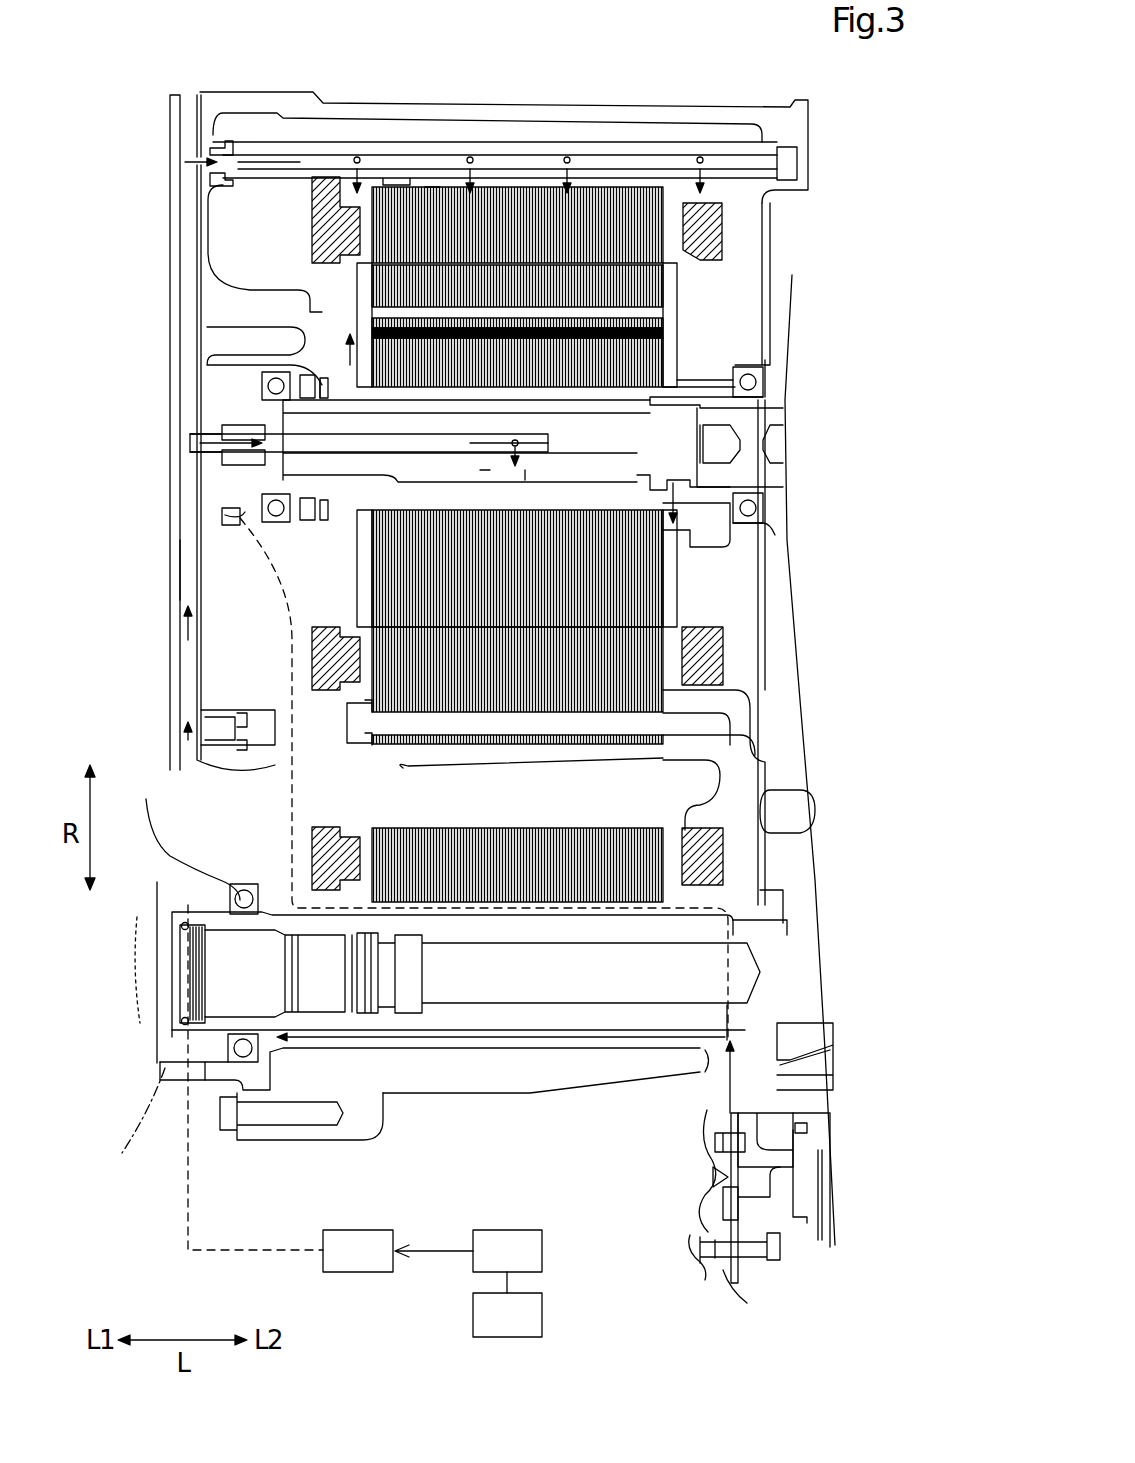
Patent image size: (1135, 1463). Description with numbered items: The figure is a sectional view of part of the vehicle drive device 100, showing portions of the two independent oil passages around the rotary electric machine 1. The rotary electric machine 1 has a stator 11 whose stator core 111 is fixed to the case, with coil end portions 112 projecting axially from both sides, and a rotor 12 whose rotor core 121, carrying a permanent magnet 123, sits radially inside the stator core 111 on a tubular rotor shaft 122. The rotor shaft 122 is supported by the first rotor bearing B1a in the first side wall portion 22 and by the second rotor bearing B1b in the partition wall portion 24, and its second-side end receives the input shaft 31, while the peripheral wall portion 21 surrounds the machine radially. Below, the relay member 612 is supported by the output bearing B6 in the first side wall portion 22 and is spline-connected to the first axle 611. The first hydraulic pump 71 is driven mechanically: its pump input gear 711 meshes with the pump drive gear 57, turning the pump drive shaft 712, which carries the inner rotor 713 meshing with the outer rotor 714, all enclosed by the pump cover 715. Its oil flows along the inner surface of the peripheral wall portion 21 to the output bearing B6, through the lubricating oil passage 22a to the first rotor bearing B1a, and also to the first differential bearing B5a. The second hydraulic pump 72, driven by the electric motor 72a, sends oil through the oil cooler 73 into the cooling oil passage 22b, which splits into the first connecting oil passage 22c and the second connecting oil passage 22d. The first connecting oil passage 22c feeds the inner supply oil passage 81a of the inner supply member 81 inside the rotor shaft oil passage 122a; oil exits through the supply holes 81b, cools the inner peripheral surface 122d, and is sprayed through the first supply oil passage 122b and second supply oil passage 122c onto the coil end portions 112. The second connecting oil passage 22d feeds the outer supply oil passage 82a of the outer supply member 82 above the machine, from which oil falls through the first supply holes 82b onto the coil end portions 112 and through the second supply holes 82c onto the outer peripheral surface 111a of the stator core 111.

The vehicle drive device 100 is at (157, 36).
The rotary electric machine 1 is at (238, 258).
The stator 11 is at (736, 636).
The stator core 111 is at (655, 228).
The outer peripheral surface of the stator core 111a is at (430, 185).
The coil end portions 112 is at (820, 662).
The rotor 12 is at (711, 583).
The rotor core 121 is at (640, 272).
The rotor shaft 122 is at (335, 515).
The rotor shaft oil passage 122a is at (683, 425).
The first supply oil passage 122b is at (322, 385).
The second supply oil passage 122c is at (648, 482).
The inner peripheral surface of the rotor shaft 122d is at (525, 476).
The permanent magnet 123 is at (657, 308).
The peripheral wall portion 21 is at (655, 118).
The first side wall portion 22 is at (180, 619).
The lubricating oil passage 22a is at (232, 522).
The cooling oil passage 22b is at (188, 567).
The first connecting oil passage 22c is at (255, 437).
The second connecting oil passage 22d is at (197, 158).
The partition wall portion 24 is at (765, 258).
The input shaft 31 is at (775, 470).
The pump drive gear 57 is at (813, 1133).
The first axle 611 is at (113, 1140).
The relay member 612 is at (810, 940).
The first hydraulic pump 71 is at (656, 1251).
The pump input gear 711 is at (800, 1222).
The pump drive shaft 712 is at (752, 1177).
The inner rotor 713 is at (720, 1190).
The outer rotor 714 is at (722, 1135).
The pump cover 715 is at (755, 1128).
The second hydraulic pump 72 is at (510, 1230).
The electric motor 72a is at (473, 1318).
The oil cooler 73 is at (367, 1230).
The inner supply member 81 is at (385, 453).
The inner supply oil passage 81a is at (481, 470).
The supply hole 81b is at (540, 426).
The outer supply member 82 is at (300, 150).
The outer supply oil passage 82a is at (272, 165).
The first supply hole 82b is at (730, 87).
The second supply hole 82c is at (568, 178).
The first rotor bearing B1a is at (260, 385).
The second rotor bearing B1b is at (765, 378).
The first differential bearing B5a is at (820, 1055).
The output bearing B6 is at (245, 880).